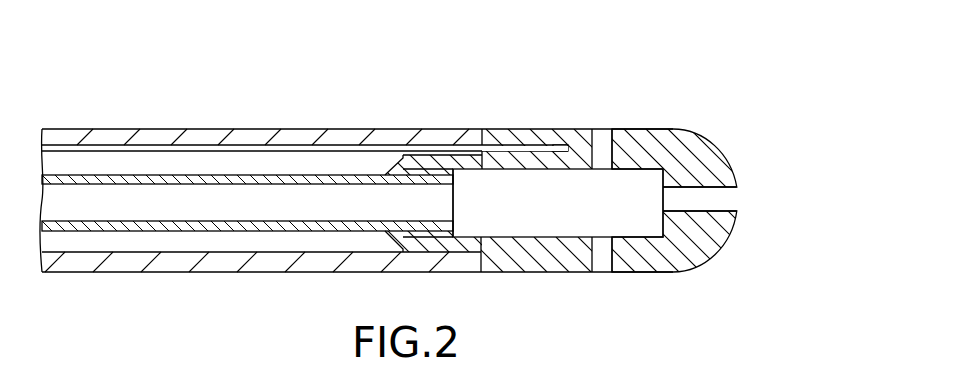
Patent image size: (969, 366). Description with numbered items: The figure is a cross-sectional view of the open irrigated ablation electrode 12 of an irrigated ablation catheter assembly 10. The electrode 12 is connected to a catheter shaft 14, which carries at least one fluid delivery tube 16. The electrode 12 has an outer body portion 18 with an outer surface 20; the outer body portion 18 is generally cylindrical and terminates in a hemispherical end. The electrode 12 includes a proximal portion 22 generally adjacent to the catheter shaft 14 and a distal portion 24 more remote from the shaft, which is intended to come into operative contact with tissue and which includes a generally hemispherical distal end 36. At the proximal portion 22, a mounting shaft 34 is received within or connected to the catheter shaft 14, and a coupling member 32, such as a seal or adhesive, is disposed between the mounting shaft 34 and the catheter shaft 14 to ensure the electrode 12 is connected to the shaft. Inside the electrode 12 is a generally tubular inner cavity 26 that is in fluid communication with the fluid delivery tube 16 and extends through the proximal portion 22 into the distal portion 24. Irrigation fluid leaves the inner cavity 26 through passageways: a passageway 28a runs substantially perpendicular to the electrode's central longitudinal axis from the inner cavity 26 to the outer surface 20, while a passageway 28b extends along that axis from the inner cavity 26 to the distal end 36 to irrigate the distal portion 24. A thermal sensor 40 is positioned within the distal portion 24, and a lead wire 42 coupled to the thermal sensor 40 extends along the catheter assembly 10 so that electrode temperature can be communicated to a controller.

The irrigated ablation catheter assembly 10 is at (372, 90).
The open irrigated ablation electrode 12 is at (598, 106).
The catheter shaft 14 is at (258, 128).
The fluid delivery tube 16 is at (107, 212).
The outer body portion 18 is at (538, 258).
The outer surface 20 is at (666, 128).
The proximal portion 22 is at (515, 126).
The distal portion 24 is at (744, 77).
The inner cavity 26 is at (508, 224).
The fluid passageway 28a is at (603, 128).
The fluid passageway 28b is at (713, 192).
The coupling member 32 is at (403, 160).
The mounting shaft 34 is at (453, 163).
The distal end 36 is at (746, 190).
The thermal sensor 40 is at (558, 147).
The lead wire 42 is at (341, 142).